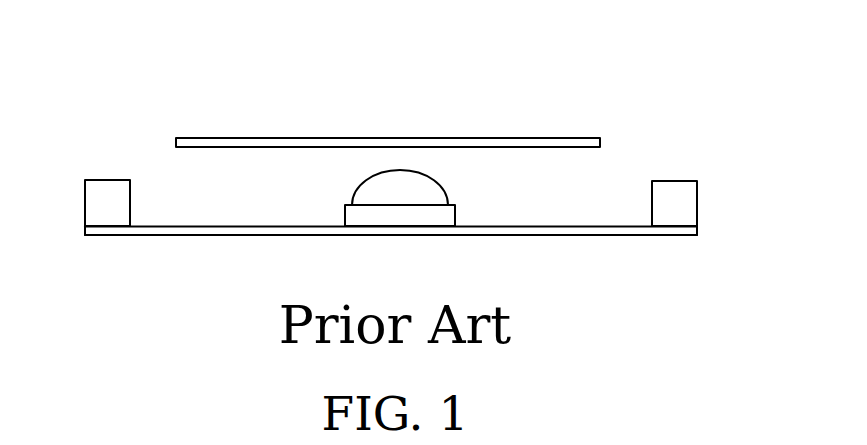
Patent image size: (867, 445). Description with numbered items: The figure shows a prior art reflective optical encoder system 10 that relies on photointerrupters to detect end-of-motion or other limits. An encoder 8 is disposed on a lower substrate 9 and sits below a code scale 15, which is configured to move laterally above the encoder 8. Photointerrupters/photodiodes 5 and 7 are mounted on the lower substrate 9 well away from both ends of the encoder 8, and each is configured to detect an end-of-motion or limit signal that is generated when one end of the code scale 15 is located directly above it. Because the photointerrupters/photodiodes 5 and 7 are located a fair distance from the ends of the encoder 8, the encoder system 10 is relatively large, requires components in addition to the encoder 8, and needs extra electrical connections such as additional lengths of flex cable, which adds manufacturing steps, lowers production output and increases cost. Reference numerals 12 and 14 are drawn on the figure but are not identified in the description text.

The encoder system 10 is at (698, 90).
The lower substrate 9 is at (596, 236).
The photointerrupter/photodiode 7 is at (98, 180).
The photointerrupter/photodiode 5 is at (673, 181).
The LED chip / die 12 is at (345, 218).
The encapsulant dome / lens 14 is at (377, 193).
The code scale 15 is at (510, 138).
The encoder 8 is at (108, 238).